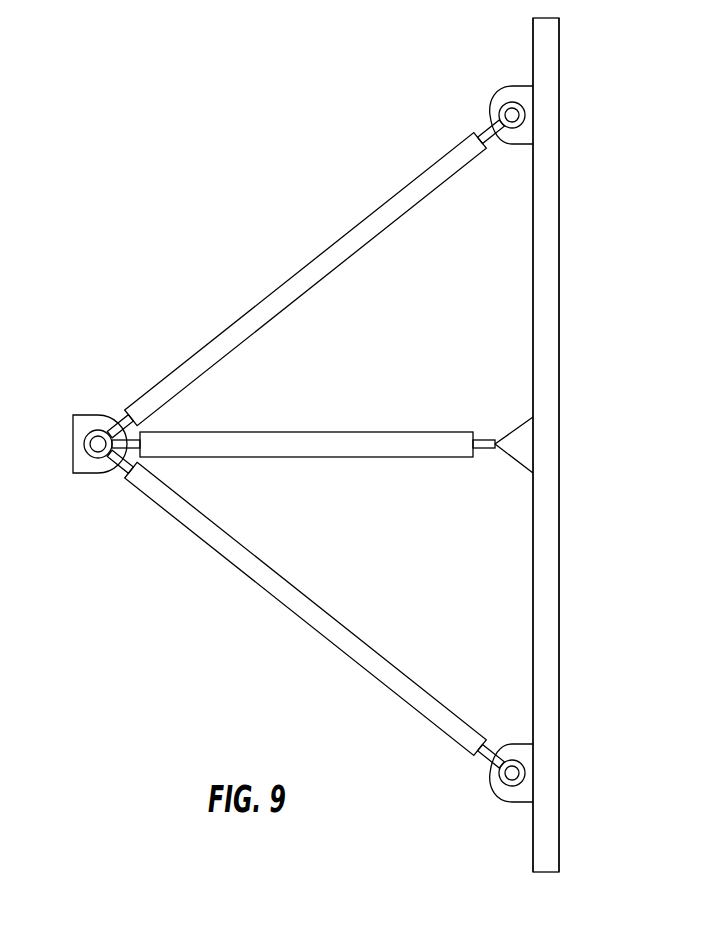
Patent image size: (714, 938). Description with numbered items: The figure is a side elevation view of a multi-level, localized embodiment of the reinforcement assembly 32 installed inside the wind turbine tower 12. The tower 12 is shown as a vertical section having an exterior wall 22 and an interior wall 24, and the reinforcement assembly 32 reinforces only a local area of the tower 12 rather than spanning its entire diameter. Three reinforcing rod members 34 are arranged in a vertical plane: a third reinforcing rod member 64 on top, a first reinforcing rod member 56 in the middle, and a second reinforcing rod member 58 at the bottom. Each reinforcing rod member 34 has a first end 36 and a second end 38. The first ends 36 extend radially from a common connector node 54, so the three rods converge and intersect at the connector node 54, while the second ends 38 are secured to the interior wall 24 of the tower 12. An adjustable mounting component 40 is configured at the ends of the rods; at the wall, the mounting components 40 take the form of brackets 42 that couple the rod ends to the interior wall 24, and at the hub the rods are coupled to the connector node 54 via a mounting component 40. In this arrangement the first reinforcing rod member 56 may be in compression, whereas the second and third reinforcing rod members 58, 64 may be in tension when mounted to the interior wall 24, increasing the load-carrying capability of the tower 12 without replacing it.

The wind turbine tower 12 is at (568, 368).
The exterior wall 22 is at (560, 510).
The interior wall 24 is at (533, 560).
The reinforcement assembly 32 is at (279, 433).
The reinforcing rod members 34 is at (306, 444).
The first end 36 is at (155, 432).
The second end 38 is at (455, 145).
The adjustable mounting component 40 is at (479, 80).
The bracket 42 is at (512, 86).
The connector node 54 is at (84, 413).
The first reinforcing rod members 56 is at (290, 432).
The second reinforcing rod members 58 is at (338, 648).
The third reinforcing rod members 64 is at (300, 283).